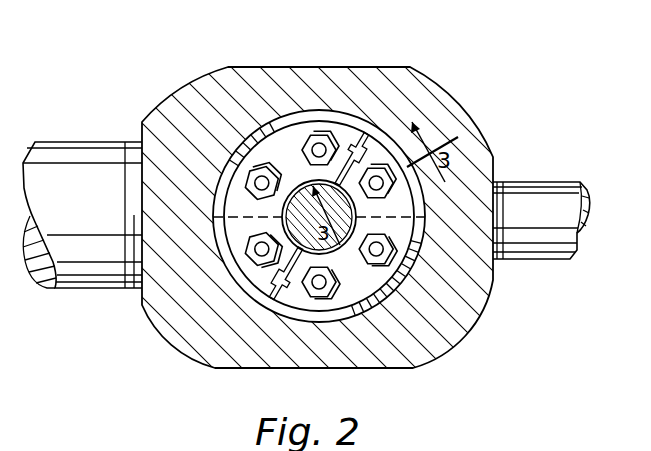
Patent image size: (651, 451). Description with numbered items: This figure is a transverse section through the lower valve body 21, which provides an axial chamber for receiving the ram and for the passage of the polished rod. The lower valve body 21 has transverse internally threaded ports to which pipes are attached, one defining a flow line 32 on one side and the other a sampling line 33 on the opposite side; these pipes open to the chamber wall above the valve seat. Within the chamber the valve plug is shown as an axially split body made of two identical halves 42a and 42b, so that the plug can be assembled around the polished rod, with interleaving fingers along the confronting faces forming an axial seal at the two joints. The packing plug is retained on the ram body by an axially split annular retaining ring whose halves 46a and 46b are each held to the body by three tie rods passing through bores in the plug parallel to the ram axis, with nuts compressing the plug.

The lower valve body 21 is at (377, 60).
The flow line 32 is at (75, 155).
The sampling line 33 is at (534, 187).
The plug half 42a is at (286, 120).
The plug half 42b is at (353, 315).
The retaining ring half 46a is at (255, 276).
The retaining ring half 46b is at (398, 235).